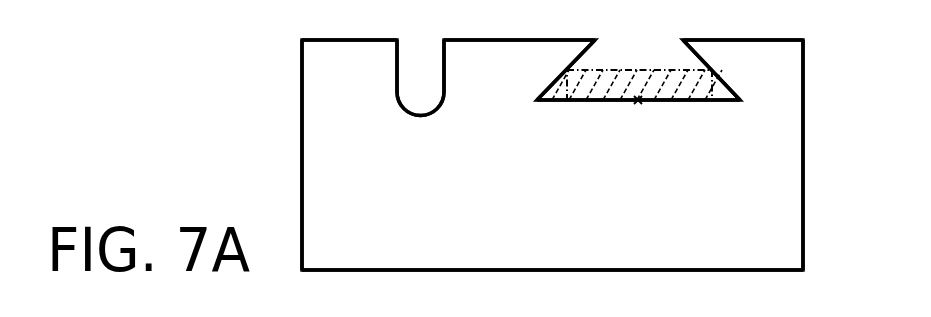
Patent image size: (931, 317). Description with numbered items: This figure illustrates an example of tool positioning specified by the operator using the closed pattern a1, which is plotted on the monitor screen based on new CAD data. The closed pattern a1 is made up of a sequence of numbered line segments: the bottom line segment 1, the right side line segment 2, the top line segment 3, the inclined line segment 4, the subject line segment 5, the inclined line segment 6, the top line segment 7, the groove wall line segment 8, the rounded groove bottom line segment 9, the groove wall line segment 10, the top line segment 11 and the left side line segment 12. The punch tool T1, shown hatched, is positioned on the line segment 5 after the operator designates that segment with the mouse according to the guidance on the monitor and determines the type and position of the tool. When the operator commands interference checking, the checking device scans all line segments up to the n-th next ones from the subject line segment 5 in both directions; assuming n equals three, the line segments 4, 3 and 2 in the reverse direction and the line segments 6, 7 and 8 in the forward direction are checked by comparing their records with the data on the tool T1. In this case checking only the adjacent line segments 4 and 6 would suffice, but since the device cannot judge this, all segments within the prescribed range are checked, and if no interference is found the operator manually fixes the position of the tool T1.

The line segment 1 is at (552, 291).
The line segment 2 is at (818, 155).
The line segment 3 is at (743, 21).
The line segment 4 is at (716, 70).
The line segment 5 is at (638, 119).
The line segment 6 is at (561, 70).
The line segment 7 is at (519, 21).
The line segment 8 is at (459, 66).
The line segment 9 is at (420, 124).
The line segment 10 is at (377, 66).
The line segment 11 is at (349, 21).
The line segment 12 is at (282, 155).
The closed pattern a1 is at (302, 101).
The punch tool T1 is at (638, 76).